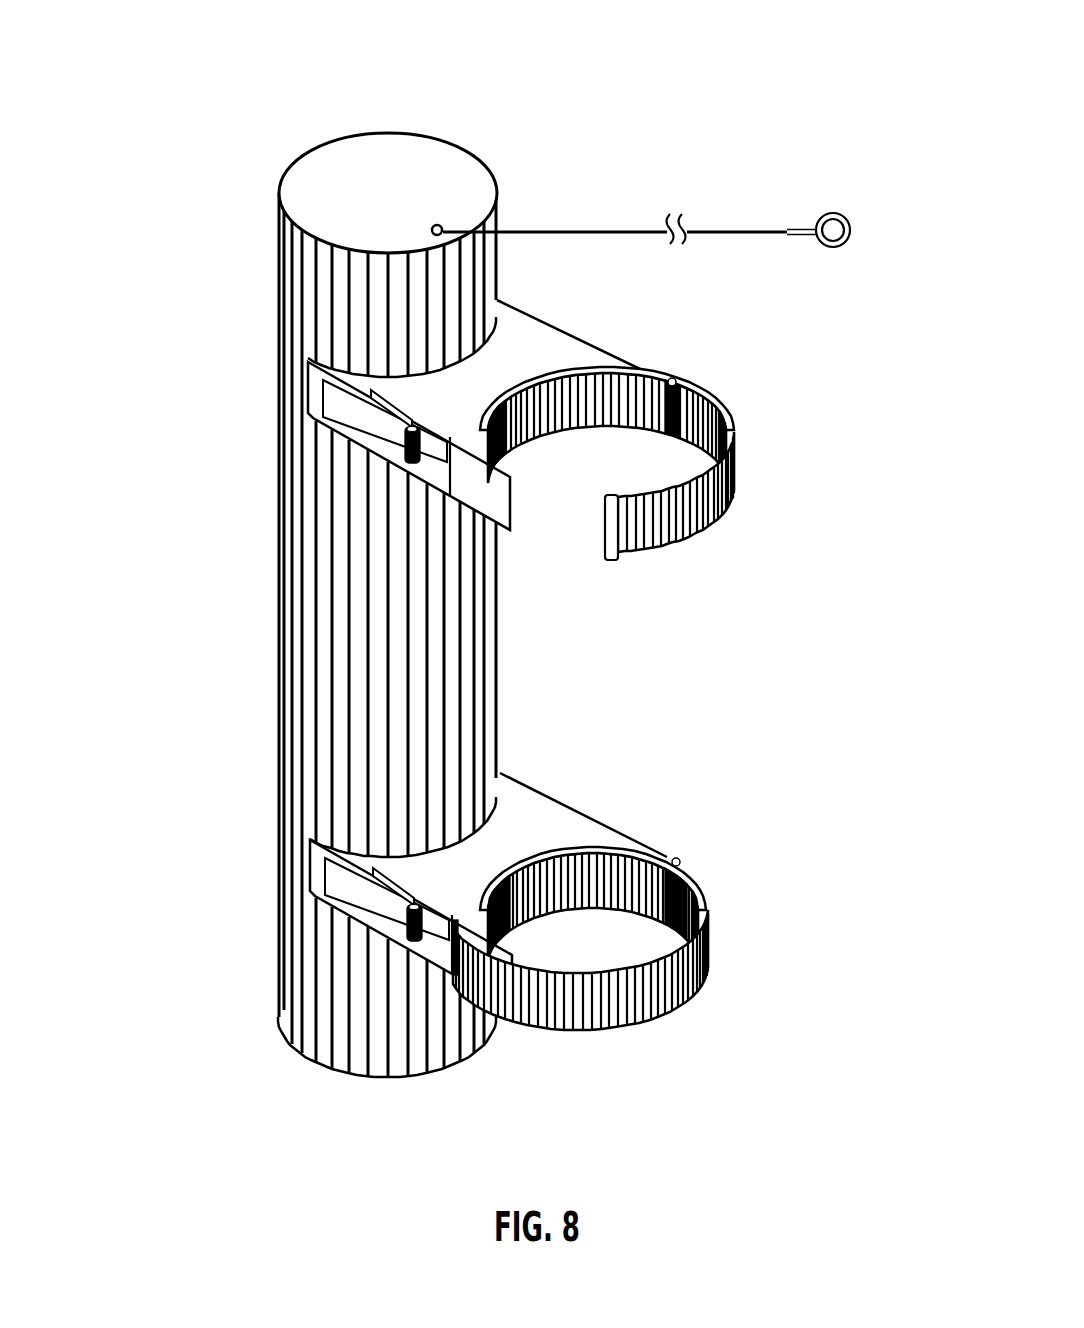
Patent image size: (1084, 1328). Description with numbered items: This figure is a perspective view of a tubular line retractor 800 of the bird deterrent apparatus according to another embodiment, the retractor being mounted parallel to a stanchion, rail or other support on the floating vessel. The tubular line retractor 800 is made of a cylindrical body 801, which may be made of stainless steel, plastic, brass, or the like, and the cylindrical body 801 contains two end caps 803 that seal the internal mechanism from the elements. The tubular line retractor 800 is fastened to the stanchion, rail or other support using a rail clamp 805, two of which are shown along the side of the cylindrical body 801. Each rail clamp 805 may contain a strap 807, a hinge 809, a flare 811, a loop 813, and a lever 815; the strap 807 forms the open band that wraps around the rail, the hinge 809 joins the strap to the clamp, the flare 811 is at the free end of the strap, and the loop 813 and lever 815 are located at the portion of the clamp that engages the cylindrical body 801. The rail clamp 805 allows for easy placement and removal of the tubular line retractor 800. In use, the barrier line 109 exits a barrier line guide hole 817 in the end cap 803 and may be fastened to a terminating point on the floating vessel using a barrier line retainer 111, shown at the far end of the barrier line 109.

The tubular line retractor 800 is at (275, 143).
The cylindrical body 801 is at (340, 640).
The end cap 803 is at (385, 190).
The rail clamp 805 is at (523, 347).
The strap 807 is at (707, 507).
The hinge 809 is at (680, 382).
The flare 811 is at (623, 543).
The loop 813 is at (452, 455).
The lever 815 is at (355, 417).
The barrier line guide hole 817 is at (440, 226).
The barrier line 109 is at (625, 230).
The barrier line retainer 111 is at (835, 213).